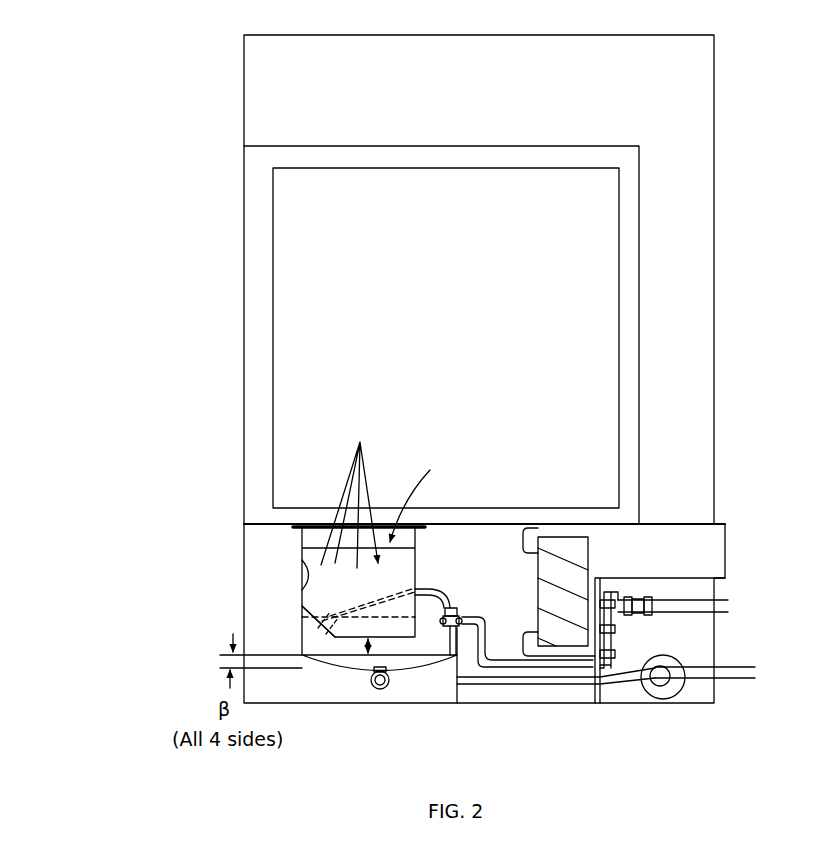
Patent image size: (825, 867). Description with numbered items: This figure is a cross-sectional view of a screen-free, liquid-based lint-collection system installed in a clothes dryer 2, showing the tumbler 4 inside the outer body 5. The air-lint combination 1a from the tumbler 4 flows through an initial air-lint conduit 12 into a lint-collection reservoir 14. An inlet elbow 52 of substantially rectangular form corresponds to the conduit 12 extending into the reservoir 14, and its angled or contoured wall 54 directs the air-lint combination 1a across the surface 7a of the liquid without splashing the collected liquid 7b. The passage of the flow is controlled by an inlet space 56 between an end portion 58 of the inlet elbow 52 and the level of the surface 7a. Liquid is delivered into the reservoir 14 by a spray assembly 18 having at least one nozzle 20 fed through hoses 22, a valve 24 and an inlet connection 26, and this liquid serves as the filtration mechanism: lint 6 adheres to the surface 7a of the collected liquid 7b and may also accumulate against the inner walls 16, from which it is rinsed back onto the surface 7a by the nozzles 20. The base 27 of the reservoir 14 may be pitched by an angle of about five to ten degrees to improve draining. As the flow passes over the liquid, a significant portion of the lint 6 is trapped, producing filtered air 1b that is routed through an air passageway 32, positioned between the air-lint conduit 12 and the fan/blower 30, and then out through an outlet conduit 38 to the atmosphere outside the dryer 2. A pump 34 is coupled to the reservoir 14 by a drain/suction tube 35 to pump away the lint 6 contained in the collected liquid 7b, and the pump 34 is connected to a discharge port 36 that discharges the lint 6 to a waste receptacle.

The clothes dryer 2 is at (228, 68).
The tumbler 4 is at (576, 162).
The outer body 5 is at (718, 243).
The air-lint combination 1a is at (360, 442).
The filtered air 1b is at (800, 553).
The lint 6 is at (327, 606).
The surface of the liquid 7a is at (233, 630).
The collected liquid 7b is at (412, 672).
The initial air-lint conduit 12 is at (297, 556).
The lint-collection reservoir 14 is at (300, 640).
The inner walls 16 is at (306, 615).
The spray assembly 18 is at (470, 642).
The nozzle 20 is at (298, 652).
The hoses 22 is at (466, 628).
The valve 24 is at (616, 664).
The inlet connection 26 is at (654, 612).
The base 27 is at (384, 692).
The fan/blower 30 is at (556, 650).
The air passageway 32 is at (549, 592).
The pump 34 is at (690, 688).
The drain/suction tube 35 is at (598, 676).
The discharge port 36 is at (742, 680).
The outlet conduit 38 is at (672, 522).
The inlet elbow 52 is at (321, 560).
The angled or contoured wall 54 is at (300, 572).
The inlet space 56 is at (374, 648).
The end portion 58 is at (355, 657).